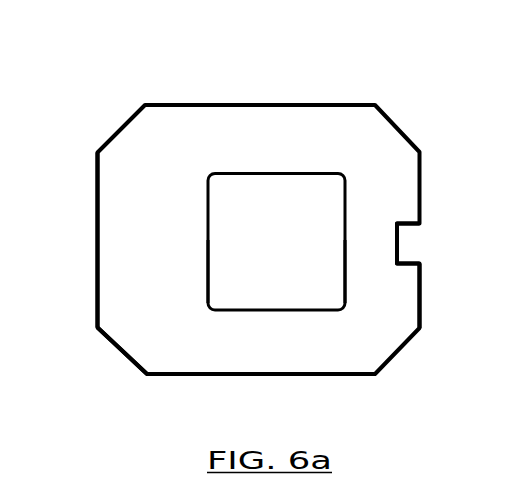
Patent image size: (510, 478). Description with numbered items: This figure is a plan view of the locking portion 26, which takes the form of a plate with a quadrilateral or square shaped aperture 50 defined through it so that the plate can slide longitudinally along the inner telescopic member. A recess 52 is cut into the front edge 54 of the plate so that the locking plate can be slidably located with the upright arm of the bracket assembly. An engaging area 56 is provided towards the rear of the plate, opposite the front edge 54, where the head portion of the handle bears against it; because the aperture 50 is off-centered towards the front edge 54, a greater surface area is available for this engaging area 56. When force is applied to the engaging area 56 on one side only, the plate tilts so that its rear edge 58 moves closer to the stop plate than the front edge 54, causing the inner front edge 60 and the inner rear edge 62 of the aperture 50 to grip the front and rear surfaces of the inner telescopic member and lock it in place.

The locking portion 26 is at (421, 93).
The aperture 50 is at (283, 206).
The recess 52 is at (411, 244).
The front edge 54 is at (421, 307).
The engaging area 56 is at (135, 273).
The rear edge 58 is at (90, 191).
The inner front edge 60 is at (333, 263).
The inner rear edge 62 is at (216, 292).